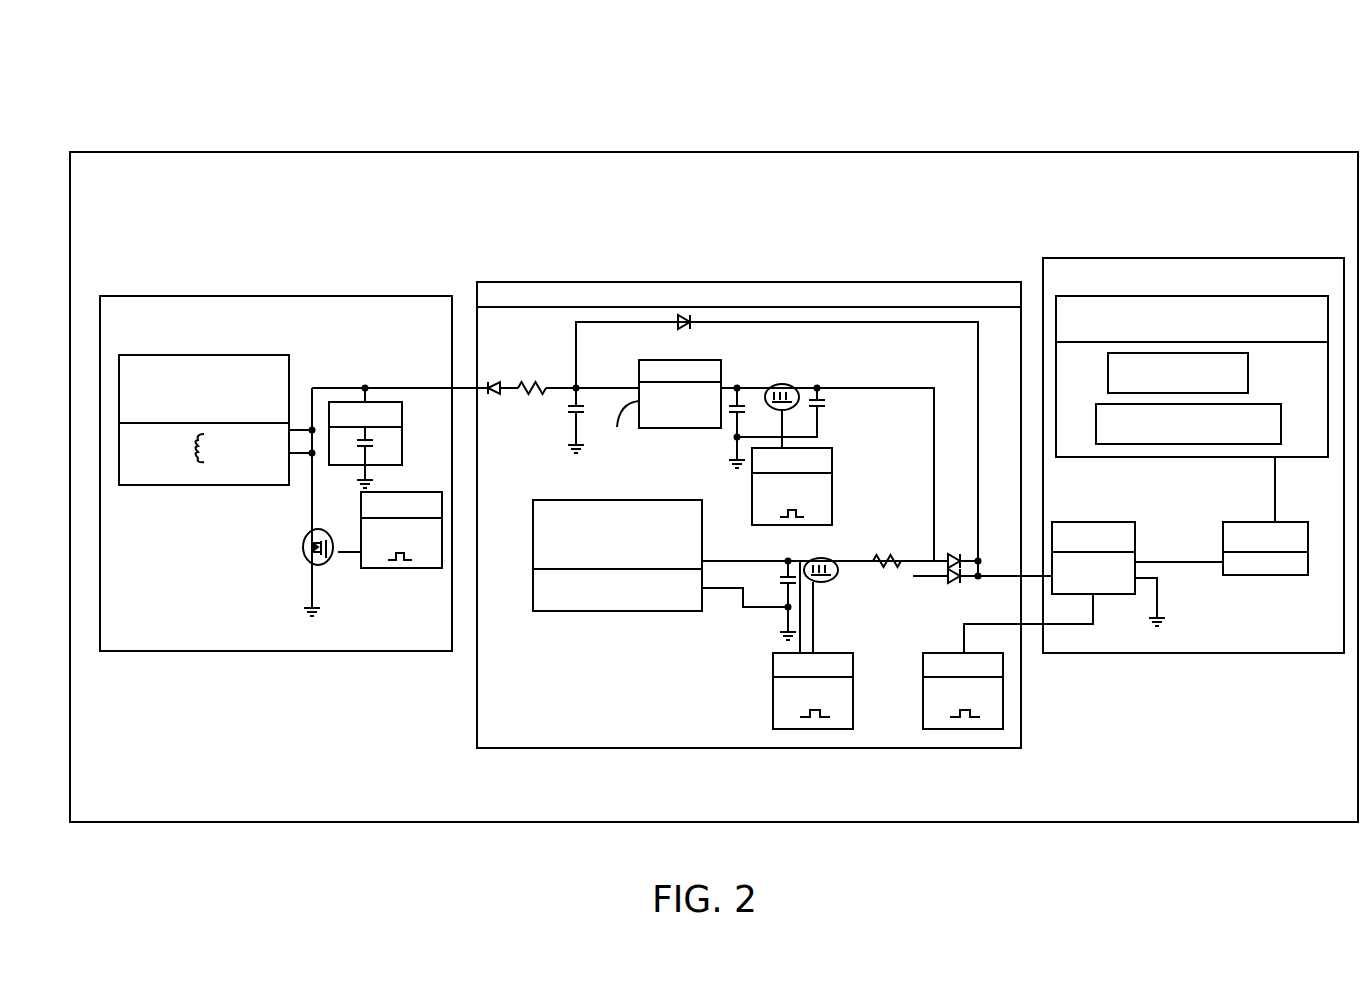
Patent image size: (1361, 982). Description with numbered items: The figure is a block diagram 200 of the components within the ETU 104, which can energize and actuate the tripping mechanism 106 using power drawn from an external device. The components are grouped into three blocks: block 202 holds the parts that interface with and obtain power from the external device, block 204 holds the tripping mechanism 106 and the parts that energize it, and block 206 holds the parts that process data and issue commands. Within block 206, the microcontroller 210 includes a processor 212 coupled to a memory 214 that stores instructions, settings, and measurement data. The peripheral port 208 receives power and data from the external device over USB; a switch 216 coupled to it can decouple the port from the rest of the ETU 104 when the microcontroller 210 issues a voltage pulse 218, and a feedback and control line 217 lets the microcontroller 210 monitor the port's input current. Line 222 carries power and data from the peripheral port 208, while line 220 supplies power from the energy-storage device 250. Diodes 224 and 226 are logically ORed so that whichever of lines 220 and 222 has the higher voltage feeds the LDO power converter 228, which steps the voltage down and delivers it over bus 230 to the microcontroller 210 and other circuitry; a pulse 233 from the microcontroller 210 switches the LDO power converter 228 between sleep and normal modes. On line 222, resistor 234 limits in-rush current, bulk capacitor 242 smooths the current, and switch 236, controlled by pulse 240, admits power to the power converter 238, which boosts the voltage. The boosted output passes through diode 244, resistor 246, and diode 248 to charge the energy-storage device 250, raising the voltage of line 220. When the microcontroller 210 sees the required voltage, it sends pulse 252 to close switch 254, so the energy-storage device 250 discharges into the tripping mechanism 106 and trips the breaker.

The block diagram 200 is at (1095, 126).
The ETU 104 is at (771, 233).
The tripping mechanism 106 is at (198, 355).
The block 204 is at (321, 296).
The block 202 is at (890, 282).
The block 206 is at (1145, 258).
The microcontroller 210 is at (1218, 296).
The processor 212 is at (1095, 422).
The memory 214 is at (1248, 370).
The peripheral port 208 is at (530, 531).
The switch 216 is at (806, 559).
The feedback and control line 217 is at (790, 645).
The voltage pulse 218 is at (773, 700).
The line 220 is at (366, 354).
The line 222 is at (898, 530).
The diode 224 is at (953, 583).
The diode 226 is at (955, 553).
The LDO power converter 228 is at (1085, 518).
The bus 230 is at (1223, 530).
The pulse 233 is at (963, 730).
The resistor 234 is at (872, 560).
The switch 236 is at (790, 385).
The power converter 238 is at (712, 360).
The pulse 240 is at (832, 460).
The bulk capacitor 242 is at (823, 407).
The diode 244 is at (683, 330).
The resistor 246 is at (530, 385).
The diode 248 is at (493, 397).
The energy-storage device 250 is at (402, 415).
The pulse 252 is at (393, 568).
The switch 254 is at (300, 548).